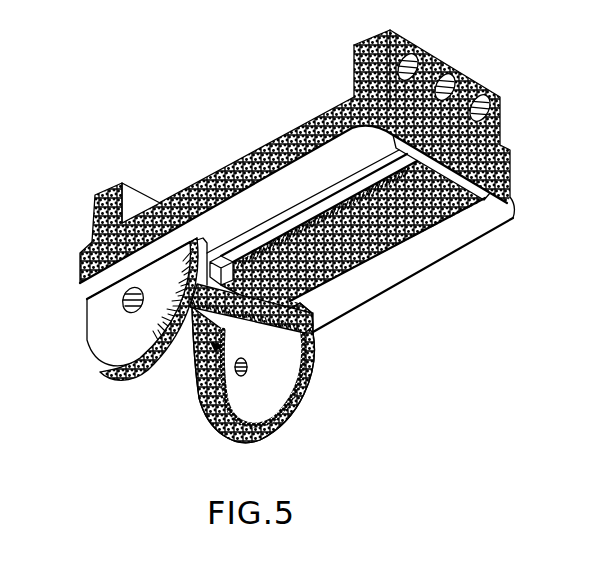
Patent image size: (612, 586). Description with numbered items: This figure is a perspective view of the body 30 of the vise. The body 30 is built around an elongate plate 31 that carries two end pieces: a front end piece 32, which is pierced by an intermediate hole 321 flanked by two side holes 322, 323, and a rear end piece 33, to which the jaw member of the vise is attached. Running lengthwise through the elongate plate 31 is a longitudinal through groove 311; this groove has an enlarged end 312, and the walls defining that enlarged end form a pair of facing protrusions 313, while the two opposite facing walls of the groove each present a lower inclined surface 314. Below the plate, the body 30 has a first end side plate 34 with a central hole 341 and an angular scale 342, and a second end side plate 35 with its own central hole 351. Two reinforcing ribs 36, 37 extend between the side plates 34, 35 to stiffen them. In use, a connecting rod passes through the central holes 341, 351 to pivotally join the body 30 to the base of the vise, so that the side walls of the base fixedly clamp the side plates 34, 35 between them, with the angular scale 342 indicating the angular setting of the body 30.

The body 30 is at (199, 138).
The elongate plate 31 is at (478, 230).
The longitudinal through groove 311 is at (337, 203).
The enlarged end 312 is at (233, 281).
The facing protrusions 313 is at (210, 267).
The lower inclined surface 314 is at (367, 197).
The front end piece 32 is at (358, 69).
The intermediate hole 321 is at (452, 86).
The side hole 322 is at (487, 110).
The side hole 323 is at (414, 62).
The rear end piece 33 is at (97, 193).
The first end side plate 34 is at (108, 345).
The central hole 341 is at (123, 299).
The angular scale 342 is at (152, 327).
The second end side plate 35 is at (289, 409).
The central hole 351 is at (239, 378).
The reinforcing rib 36 is at (196, 400).
The reinforcing rib 37 is at (314, 358).